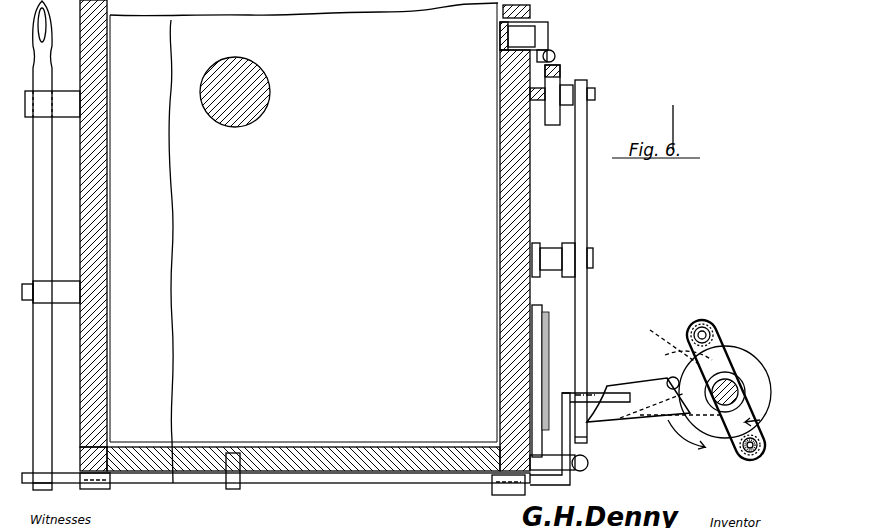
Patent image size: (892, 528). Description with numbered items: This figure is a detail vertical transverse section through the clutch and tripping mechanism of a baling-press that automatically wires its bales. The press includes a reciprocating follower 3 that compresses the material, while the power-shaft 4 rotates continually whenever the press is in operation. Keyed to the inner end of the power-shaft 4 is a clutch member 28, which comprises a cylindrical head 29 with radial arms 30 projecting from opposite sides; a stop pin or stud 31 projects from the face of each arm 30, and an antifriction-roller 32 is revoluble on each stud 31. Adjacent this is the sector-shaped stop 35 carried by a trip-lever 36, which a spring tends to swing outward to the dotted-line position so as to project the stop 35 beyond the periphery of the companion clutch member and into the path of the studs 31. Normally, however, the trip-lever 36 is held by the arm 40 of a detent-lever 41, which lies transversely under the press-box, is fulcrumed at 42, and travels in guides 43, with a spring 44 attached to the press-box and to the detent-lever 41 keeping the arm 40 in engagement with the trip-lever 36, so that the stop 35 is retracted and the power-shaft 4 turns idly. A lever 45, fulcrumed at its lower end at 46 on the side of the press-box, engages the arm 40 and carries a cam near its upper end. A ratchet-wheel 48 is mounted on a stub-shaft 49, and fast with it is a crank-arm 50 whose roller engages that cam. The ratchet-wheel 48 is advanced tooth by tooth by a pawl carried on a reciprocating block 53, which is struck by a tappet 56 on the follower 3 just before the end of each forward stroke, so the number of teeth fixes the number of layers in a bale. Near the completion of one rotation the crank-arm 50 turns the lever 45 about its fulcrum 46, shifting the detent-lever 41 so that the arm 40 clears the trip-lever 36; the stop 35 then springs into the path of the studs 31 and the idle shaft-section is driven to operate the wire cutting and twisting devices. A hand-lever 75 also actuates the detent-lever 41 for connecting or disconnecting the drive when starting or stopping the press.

The reciprocating follower 3 is at (330, 438).
The power-shaft 4 is at (730, 386).
The clutch member 28 is at (765, 418).
The cylindrical head 29 is at (748, 396).
The radial arms 30 is at (725, 345).
The stop pin or stud 31 is at (702, 327).
The antifriction-roller 32 is at (757, 445).
The sector-shaped stop 35 is at (690, 372).
The trip-lever 36 is at (650, 383).
The arm of detent-lever 40 is at (608, 410).
The detent-lever 41 is at (418, 484).
The fulcrum of detent-lever 42 is at (230, 491).
The guides 43 is at (110, 488).
The spring 44 is at (588, 460).
The lever 45 is at (582, 218).
The fulcrum of lever 46 is at (592, 256).
The ratchet-wheel 48 is at (552, 125).
The stub-shaft 49 is at (530, 92).
The crank-arm 50 is at (560, 52).
The reciprocating block 53 is at (547, 32).
The tappet 56 is at (505, 35).
The hand-lever 75 is at (47, 240).